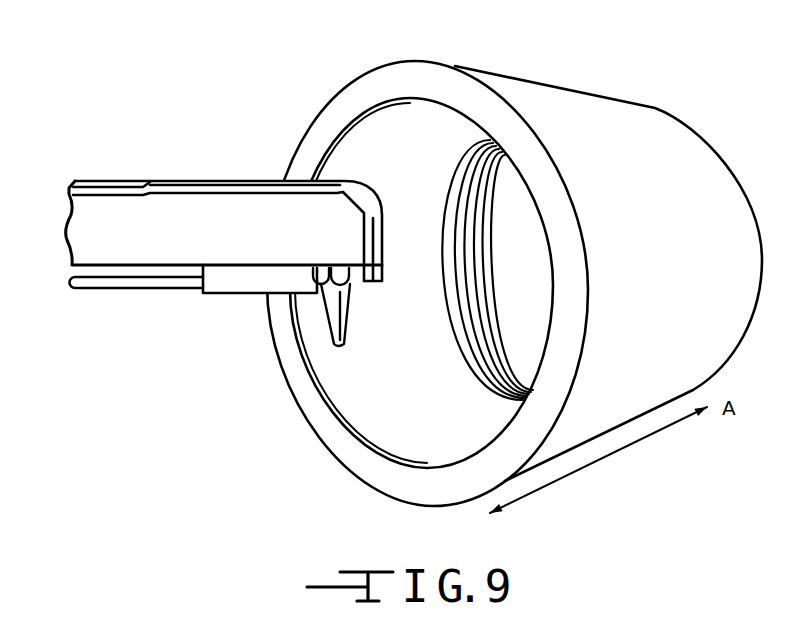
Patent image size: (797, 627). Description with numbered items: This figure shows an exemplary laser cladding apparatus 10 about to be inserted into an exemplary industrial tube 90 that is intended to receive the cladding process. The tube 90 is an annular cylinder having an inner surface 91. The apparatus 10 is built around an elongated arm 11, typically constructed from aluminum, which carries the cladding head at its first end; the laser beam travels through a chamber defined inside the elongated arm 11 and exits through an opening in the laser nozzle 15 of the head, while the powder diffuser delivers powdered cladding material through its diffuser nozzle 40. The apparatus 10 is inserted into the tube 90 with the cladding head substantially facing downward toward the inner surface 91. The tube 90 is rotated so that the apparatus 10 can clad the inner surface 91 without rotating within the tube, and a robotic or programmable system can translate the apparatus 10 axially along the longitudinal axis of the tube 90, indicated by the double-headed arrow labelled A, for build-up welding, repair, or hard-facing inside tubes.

The apparatus 10 is at (187, 168).
The elongated arm 11 is at (168, 258).
The laser nozzle 15 is at (325, 293).
The diffuser nozzle 40 is at (333, 343).
The tube 90 is at (700, 96).
The inner surface 91 is at (390, 397).